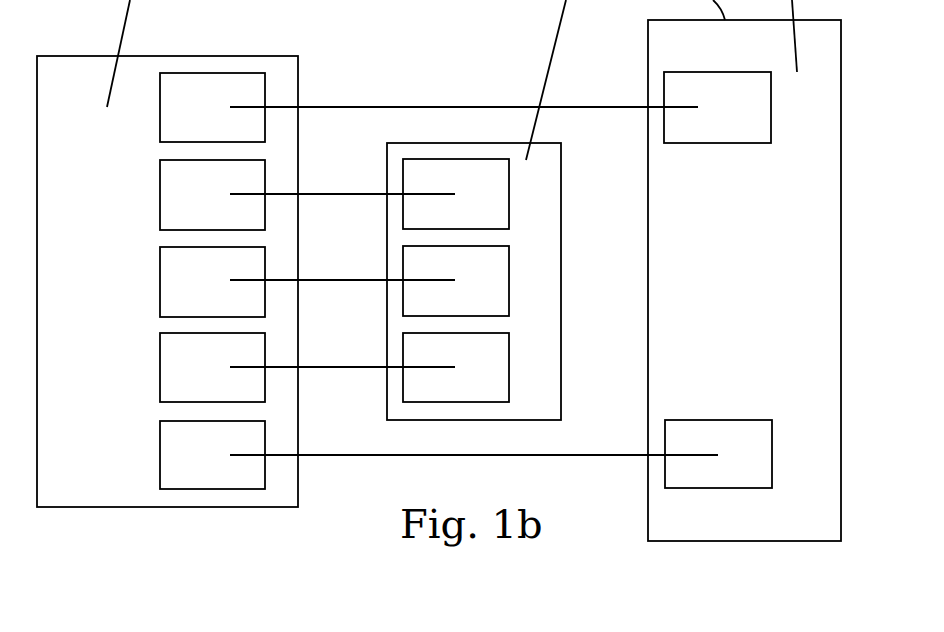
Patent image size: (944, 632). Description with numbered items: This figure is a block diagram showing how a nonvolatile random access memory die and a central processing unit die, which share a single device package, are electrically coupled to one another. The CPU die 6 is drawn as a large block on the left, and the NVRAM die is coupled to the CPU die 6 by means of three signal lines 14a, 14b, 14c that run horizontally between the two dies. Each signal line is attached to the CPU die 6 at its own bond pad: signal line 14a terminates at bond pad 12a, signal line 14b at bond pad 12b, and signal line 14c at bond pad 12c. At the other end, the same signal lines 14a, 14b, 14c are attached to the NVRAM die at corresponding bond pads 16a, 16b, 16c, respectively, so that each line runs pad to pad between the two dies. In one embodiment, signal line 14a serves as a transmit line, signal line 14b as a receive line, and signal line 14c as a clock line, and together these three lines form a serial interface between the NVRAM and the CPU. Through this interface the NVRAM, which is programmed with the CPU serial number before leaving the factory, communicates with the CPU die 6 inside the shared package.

The central processing unit (CPU) die 6 is at (247, 55).
The bond pad 12a is at (160, 218).
The bond pad 12b is at (160, 306).
The bond pad 12c is at (160, 393).
The signal line 14a is at (316, 194).
The signal line 14b is at (316, 280).
The signal line 14c is at (307, 366).
The bond pad 16a is at (509, 220).
The bond pad 16b is at (509, 304).
The bond pad 16c is at (509, 393).